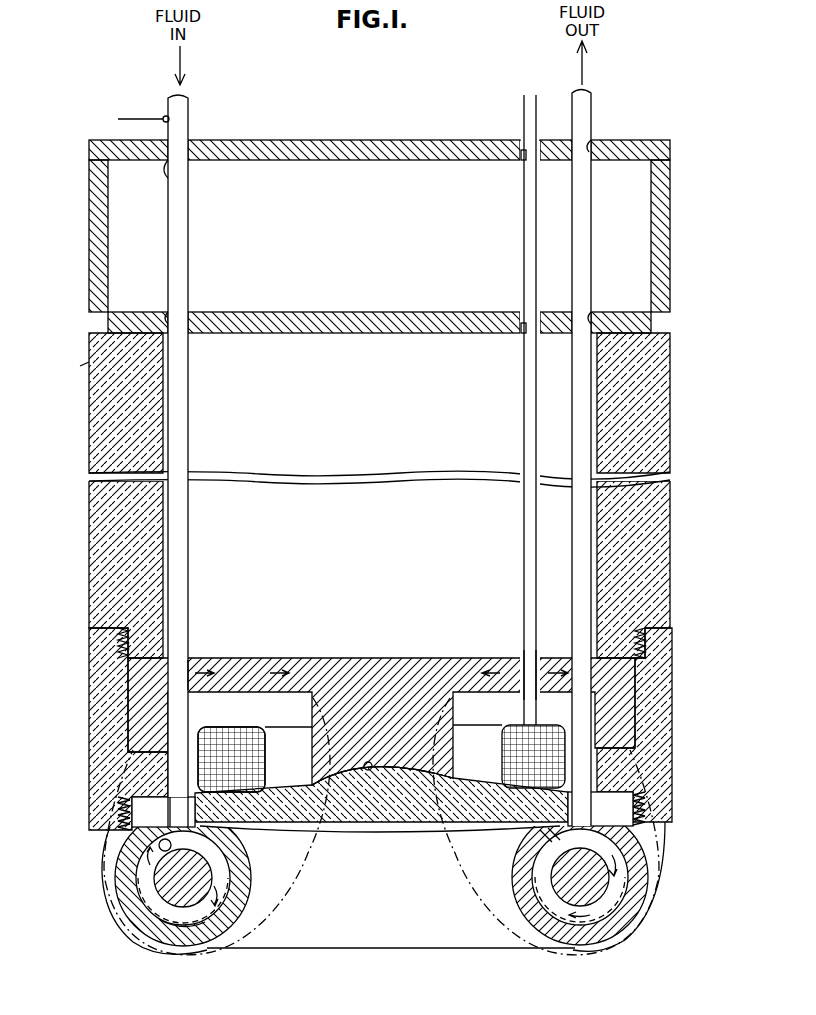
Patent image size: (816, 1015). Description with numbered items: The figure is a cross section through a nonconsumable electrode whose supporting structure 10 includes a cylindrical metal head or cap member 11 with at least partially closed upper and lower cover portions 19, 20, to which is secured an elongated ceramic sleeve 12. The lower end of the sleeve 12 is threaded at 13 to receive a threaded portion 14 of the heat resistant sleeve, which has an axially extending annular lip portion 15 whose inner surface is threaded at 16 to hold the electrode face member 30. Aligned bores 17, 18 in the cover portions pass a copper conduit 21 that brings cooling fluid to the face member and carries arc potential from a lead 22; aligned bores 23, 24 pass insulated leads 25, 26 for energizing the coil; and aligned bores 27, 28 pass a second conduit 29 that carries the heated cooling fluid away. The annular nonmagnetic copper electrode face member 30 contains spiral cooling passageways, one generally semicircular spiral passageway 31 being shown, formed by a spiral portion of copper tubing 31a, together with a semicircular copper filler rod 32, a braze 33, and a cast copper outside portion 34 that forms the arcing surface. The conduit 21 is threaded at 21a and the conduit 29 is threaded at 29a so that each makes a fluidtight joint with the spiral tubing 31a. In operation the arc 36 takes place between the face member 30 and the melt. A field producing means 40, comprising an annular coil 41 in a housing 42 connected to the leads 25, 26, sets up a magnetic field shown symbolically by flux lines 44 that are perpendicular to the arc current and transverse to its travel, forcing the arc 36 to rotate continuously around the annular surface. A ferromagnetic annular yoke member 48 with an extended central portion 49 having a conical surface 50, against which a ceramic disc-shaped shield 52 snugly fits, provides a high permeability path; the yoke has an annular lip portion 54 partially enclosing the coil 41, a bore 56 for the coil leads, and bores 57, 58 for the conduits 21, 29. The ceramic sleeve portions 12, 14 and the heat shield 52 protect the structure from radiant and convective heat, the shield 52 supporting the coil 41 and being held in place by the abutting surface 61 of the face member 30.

The supporting structure 10 is at (52, 379).
The head or cap member 11 is at (89, 226).
The sleeve 12 is at (100, 406).
The threads 13 is at (118, 645).
The threaded portion 14 is at (97, 687).
The annular lip portion 15 is at (98, 802).
The threads 16 is at (112, 810).
The bore 17 is at (188, 172).
The bore 18 is at (190, 310).
The upper cover portion 19 is at (300, 140).
The lower cover portion 20 is at (272, 312).
The conduit 21 is at (186, 116).
The threaded area 21a is at (172, 838).
The lead 22 is at (142, 119).
The bore 23 is at (521, 160).
The bore 24 is at (526, 332).
The lead 25 is at (522, 104).
The lead 26 is at (537, 98).
The bore 27 is at (592, 138).
The bore 28 is at (589, 314).
The conduit 29 is at (592, 112).
The threaded area 29a is at (650, 840).
The electrode face member 30 is at (197, 898).
The spiral passageway 31 is at (175, 918).
The copper tubing 31a is at (196, 925).
The filler rod 32 is at (210, 868).
The braze 33 is at (238, 843).
The outside portion 34 is at (232, 918).
The arc 36 is at (402, 950).
The field producing means 40 is at (214, 712).
The annular coil 41 is at (262, 727).
The housing 42 is at (502, 735).
The flux lines 44 is at (285, 896).
The yoke member 48 is at (400, 658).
The extended central portion 49 is at (330, 790).
The conical surface 50 is at (372, 770).
The disc-shaped shield 52 is at (412, 805).
The annular lip portion 54 is at (628, 698).
The bore 56 is at (528, 652).
The bore 57 is at (190, 660).
The bore 58 is at (572, 662).
The abutting surface 61 is at (530, 826).